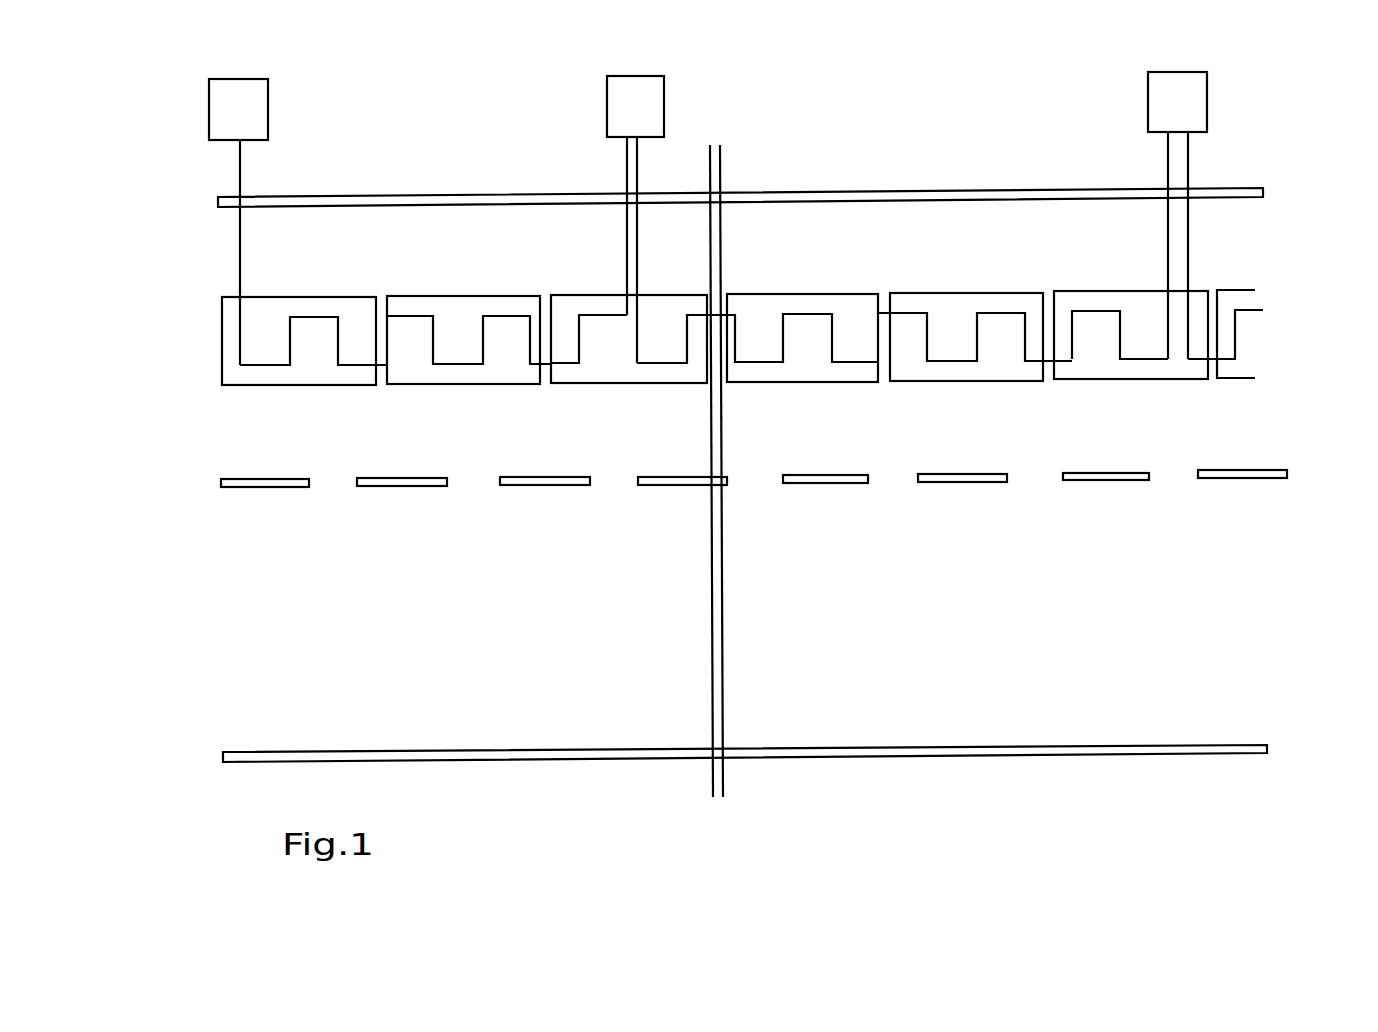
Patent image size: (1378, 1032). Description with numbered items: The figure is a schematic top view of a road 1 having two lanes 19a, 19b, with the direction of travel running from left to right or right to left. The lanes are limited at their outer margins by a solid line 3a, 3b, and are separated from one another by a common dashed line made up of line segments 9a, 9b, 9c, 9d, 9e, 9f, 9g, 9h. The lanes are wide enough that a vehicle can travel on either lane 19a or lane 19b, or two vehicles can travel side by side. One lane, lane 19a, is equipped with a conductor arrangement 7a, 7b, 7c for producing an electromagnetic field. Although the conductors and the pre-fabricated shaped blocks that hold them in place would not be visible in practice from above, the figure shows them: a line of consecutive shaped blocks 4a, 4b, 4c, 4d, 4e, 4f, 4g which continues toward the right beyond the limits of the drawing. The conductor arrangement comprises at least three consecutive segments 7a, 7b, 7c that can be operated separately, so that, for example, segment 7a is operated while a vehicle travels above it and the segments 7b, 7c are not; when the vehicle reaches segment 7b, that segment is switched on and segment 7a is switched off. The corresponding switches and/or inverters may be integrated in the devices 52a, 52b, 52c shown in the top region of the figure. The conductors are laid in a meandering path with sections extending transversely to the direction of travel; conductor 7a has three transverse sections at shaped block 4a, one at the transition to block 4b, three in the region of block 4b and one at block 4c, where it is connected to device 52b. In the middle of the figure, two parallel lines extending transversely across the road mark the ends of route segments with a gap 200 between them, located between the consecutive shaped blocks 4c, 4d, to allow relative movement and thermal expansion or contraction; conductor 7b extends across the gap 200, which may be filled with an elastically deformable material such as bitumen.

The road 1 is at (349, 648).
The solid line 3a is at (907, 757).
The solid line 3b is at (895, 190).
The shaped block 4a is at (300, 297).
The shaped block 4b is at (457, 296).
The shaped block 4c is at (580, 295).
The shaped block 4d is at (782, 294).
The shaped block 4e is at (958, 293).
The shaped block 4f is at (1103, 291).
The shaped block 4g is at (1245, 290).
The conductor segment 7a is at (238, 220).
The conductor segment 7b is at (637, 262).
The conductor segment 7c is at (1188, 230).
The line segment 9a is at (268, 487).
The line segment 9b is at (402, 486).
The line segment 9c is at (542, 485).
The line segment 9d is at (660, 485).
The line segment 9e is at (822, 483).
The line segment 9f is at (953, 482).
The line segment 9g is at (1098, 480).
The line segment 9h is at (1218, 478).
The lane 19a is at (1252, 413).
The lane 19b is at (1253, 590).
The device 52a is at (268, 120).
The device 52b is at (665, 116).
The device 52c is at (1207, 110).
The gap 200 is at (713, 607).